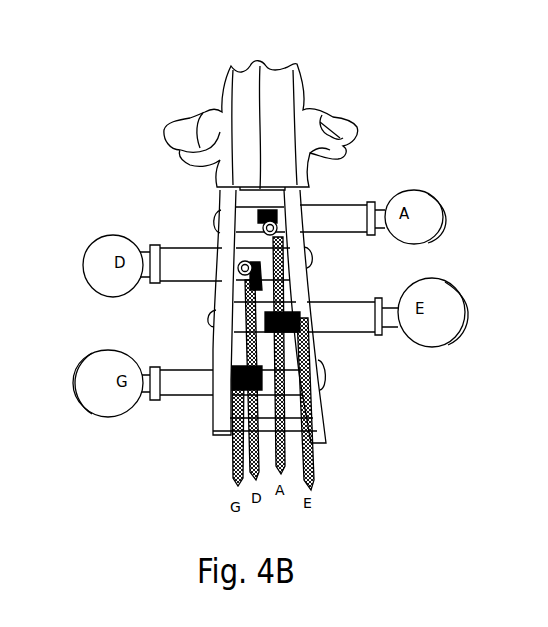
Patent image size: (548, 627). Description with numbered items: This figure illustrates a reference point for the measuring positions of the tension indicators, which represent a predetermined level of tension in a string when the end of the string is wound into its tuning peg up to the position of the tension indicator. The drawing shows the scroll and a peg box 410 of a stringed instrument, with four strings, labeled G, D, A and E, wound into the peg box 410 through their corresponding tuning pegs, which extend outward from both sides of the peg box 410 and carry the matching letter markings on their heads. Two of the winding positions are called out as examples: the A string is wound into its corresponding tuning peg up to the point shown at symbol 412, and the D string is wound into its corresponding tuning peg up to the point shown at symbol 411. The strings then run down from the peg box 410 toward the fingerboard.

The peg box 410 is at (327, 402).
The symbol 411 is at (238, 277).
The symbol 412 is at (282, 238).